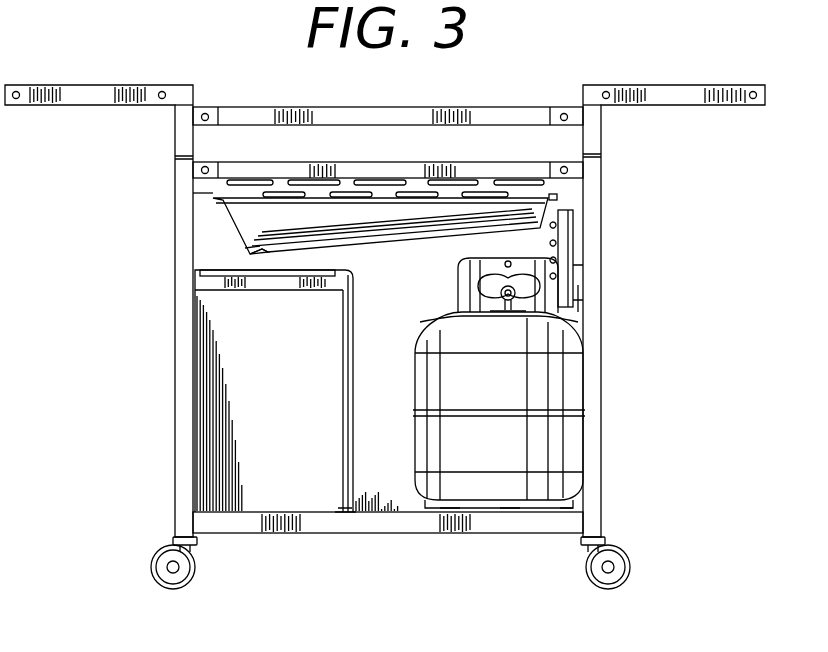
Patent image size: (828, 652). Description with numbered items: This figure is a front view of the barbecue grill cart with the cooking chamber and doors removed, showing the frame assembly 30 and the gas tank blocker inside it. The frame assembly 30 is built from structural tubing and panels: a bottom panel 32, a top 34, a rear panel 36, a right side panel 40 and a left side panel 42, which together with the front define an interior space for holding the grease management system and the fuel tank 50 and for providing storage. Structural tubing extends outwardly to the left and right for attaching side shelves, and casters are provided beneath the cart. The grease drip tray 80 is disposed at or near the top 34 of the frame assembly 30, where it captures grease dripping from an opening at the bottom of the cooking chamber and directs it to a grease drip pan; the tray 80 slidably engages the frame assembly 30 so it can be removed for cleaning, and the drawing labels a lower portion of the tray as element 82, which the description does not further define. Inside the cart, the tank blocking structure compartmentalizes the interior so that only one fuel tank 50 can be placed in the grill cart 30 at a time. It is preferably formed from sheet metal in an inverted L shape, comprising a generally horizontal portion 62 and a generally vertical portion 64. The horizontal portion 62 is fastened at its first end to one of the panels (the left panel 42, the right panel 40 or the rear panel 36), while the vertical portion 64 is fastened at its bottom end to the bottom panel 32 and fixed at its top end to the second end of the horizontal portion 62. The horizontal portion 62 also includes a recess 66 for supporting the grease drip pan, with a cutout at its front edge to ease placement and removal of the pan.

The frame assembly 30 is at (385, 337).
The bottom panel 32 is at (397, 534).
The top 34 is at (252, 150).
The rear panel 36 is at (418, 305).
The right side panel 40 is at (614, 366).
The left side panel 42 is at (166, 373).
The fuel tank 50 is at (515, 396).
The generally horizontal portion 62 is at (233, 385).
The generally vertical portion 64 is at (346, 356).
The recess 66 is at (216, 270).
The grease drip tray 80 is at (341, 228).
The tray lower edge 82 is at (277, 229).